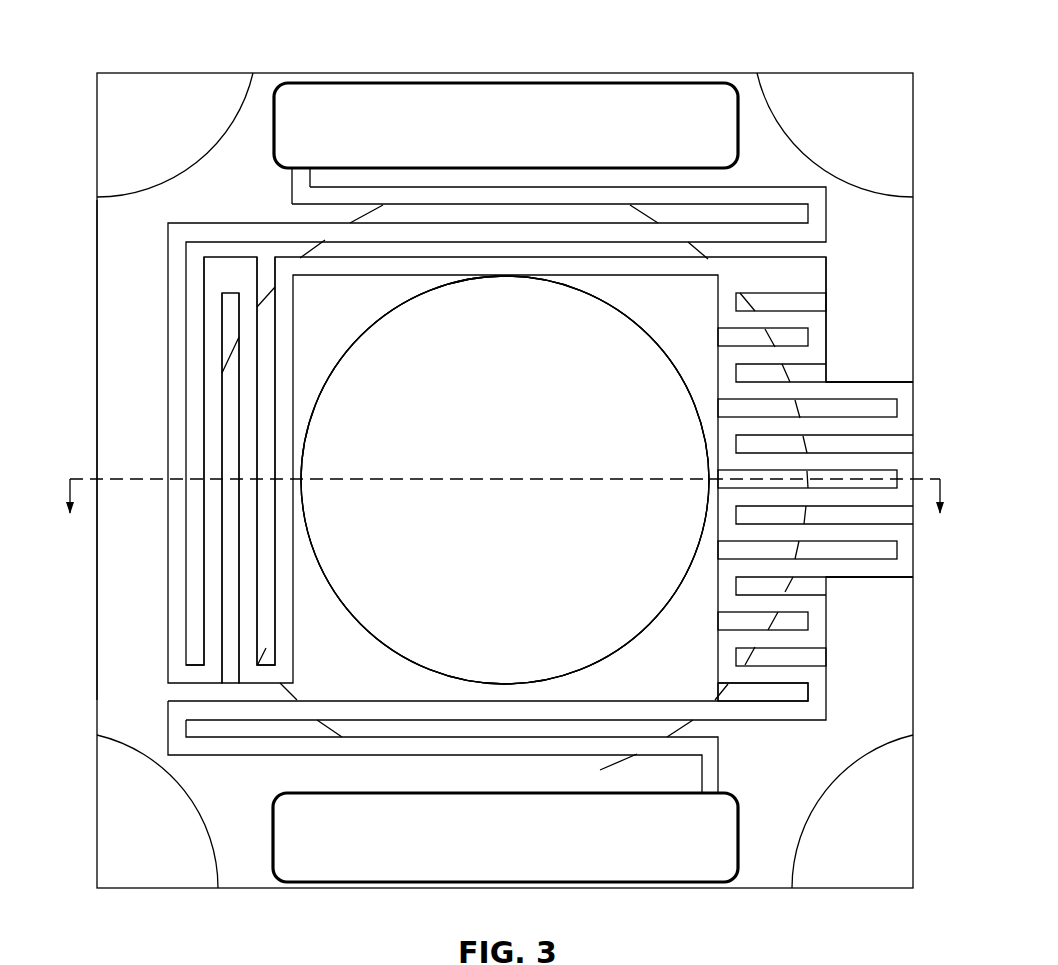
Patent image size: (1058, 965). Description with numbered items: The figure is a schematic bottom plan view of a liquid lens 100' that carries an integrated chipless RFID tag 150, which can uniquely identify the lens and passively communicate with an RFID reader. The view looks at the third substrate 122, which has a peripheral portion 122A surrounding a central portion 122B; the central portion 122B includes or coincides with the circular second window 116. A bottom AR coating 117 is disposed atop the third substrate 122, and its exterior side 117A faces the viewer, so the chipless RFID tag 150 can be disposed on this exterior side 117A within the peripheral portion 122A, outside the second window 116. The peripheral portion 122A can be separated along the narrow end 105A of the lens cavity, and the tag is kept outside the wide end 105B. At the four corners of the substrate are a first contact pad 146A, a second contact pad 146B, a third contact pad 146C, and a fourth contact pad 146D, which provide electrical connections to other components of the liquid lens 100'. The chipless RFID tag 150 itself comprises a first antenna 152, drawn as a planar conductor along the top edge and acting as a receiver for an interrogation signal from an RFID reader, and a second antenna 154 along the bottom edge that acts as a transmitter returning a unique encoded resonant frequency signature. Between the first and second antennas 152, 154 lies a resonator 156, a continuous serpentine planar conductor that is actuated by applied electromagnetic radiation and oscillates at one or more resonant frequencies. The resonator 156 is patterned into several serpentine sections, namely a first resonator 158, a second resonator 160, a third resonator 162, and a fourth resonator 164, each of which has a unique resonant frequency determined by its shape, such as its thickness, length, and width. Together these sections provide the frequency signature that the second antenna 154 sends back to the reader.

The liquid lens 100' is at (503, 473).
The narrow end 105A is at (627, 643).
The wide end 105B is at (405, 770).
The second window 116 is at (570, 440).
The bottom AR coating 117 is at (256, 93).
The exterior side 117A is at (865, 320).
The third substrate 122 is at (402, 360).
The peripheral portion 122A is at (108, 288).
The central portion 122B is at (449, 407).
The first contact pad 146A is at (148, 130).
The second contact pad 146B is at (873, 130).
The third contact pad 146C is at (872, 828).
The fourth contact pad 146D is at (143, 850).
The chipless RFID tag 150 is at (575, 62).
The first antenna 152 is at (490, 125).
The second antenna 154 is at (723, 847).
The resonator 156 is at (303, 193).
The first resonator 158 is at (733, 182).
The second resonator 160 is at (157, 403).
The third resonator 162 is at (715, 343).
The fourth resonator 164 is at (910, 440).